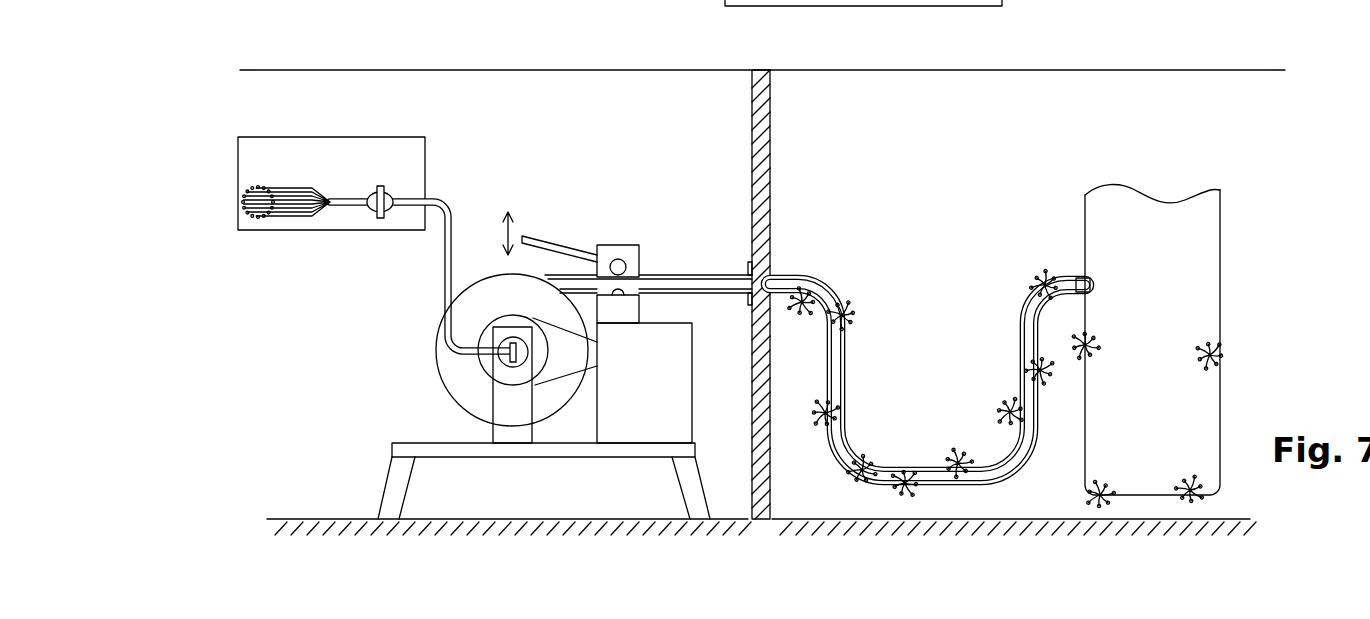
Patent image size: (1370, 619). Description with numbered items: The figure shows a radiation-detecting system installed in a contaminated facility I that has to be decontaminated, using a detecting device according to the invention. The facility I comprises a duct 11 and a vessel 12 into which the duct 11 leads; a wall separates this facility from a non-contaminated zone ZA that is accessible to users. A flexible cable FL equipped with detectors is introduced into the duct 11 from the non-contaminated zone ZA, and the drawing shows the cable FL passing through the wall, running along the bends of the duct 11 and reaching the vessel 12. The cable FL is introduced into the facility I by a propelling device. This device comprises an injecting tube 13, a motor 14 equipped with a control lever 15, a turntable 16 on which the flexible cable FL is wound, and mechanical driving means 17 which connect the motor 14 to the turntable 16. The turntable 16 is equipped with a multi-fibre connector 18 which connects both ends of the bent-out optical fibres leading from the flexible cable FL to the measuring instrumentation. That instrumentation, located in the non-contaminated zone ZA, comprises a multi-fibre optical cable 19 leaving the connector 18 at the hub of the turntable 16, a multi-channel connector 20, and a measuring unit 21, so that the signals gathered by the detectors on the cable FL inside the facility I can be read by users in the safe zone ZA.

The duct 11 is at (820, 290).
The vessel 12 is at (1183, 258).
The injecting tube 13 is at (725, 272).
The motor 14 is at (648, 380).
The control lever 15 is at (540, 238).
The turntable 16 is at (468, 383).
The mechanical driving means 17 is at (555, 383).
The multi-fibre connector 18 is at (513, 370).
The multi-fibre optical cable 19 is at (440, 275).
The multi-channel connector 20 is at (283, 172).
The measuring unit 21 is at (397, 185).
The non-contaminated zone ZA is at (375, 100).
The facility I is at (1015, 117).
The flexible cable FL is at (1030, 330).